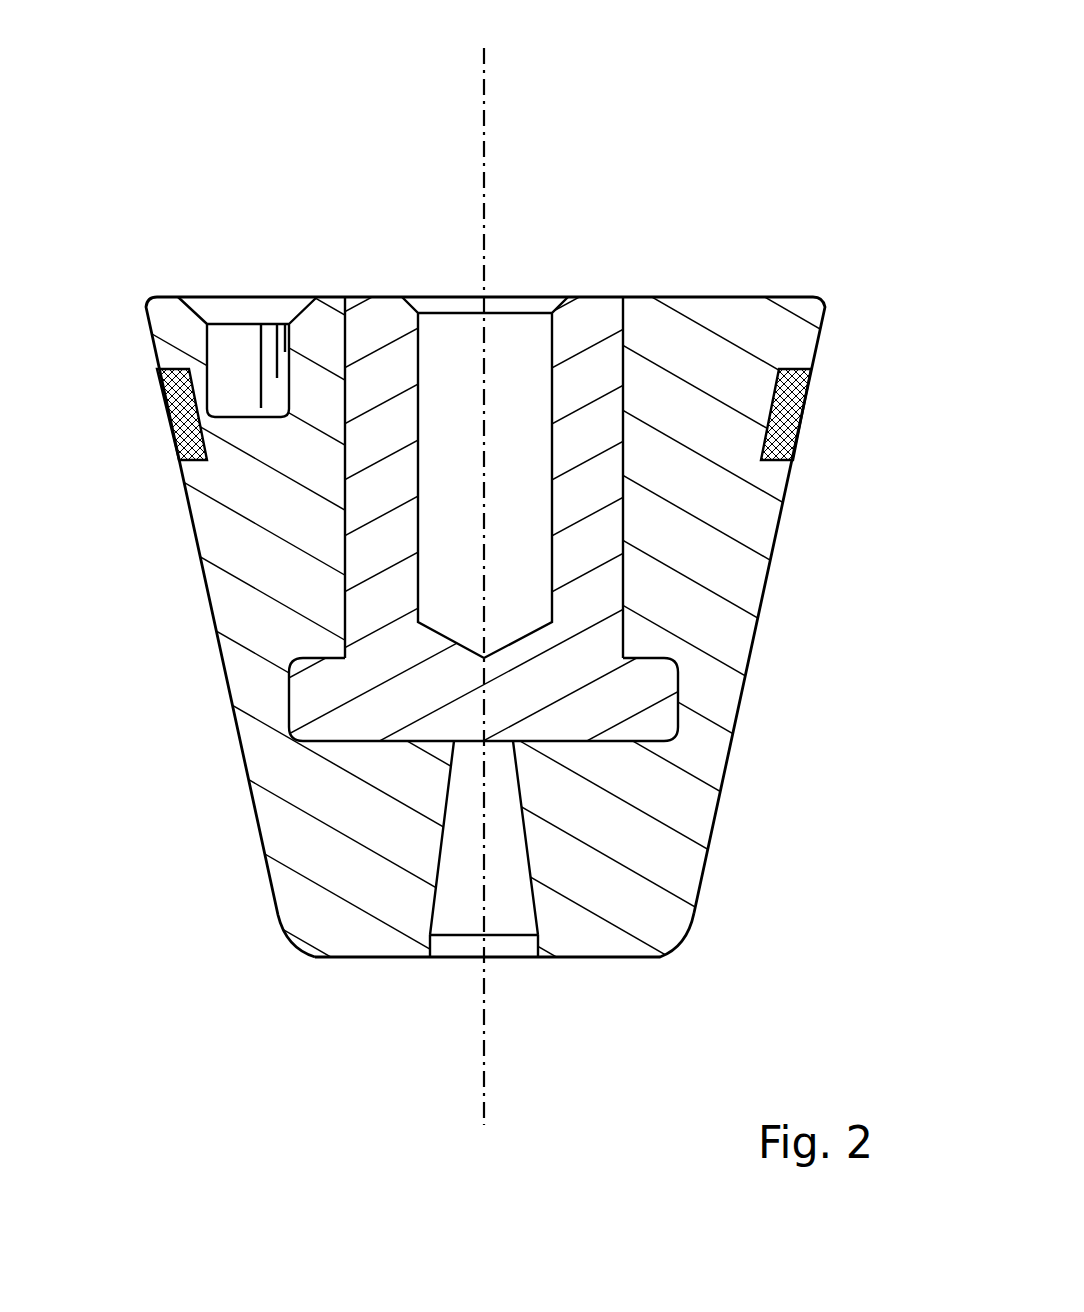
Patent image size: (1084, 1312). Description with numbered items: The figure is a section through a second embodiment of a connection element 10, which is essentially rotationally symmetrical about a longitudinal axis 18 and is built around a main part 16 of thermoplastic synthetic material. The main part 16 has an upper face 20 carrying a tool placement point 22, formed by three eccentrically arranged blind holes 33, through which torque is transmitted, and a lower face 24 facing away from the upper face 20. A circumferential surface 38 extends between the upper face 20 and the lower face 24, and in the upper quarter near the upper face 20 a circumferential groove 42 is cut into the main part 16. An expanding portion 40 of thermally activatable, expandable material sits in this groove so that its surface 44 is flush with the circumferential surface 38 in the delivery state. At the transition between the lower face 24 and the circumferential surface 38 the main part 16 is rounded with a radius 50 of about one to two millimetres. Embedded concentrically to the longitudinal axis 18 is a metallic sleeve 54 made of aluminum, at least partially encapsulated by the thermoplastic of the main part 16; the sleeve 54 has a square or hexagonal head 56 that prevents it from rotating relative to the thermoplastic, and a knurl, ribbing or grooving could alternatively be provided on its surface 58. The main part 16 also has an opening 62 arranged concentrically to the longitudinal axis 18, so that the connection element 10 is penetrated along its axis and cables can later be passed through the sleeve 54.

The connection element 10 is at (538, 529).
The main part 16 is at (735, 662).
The longitudinal axis 18 is at (484, 103).
The upper face 20 is at (738, 296).
The tool placement point 22 is at (247, 289).
The blind holes 33 is at (207, 343).
The lower face 24 is at (630, 957).
The circumferential surface 38 is at (773, 550).
The expanding portion 40 is at (790, 433).
The circumferential groove 42 is at (173, 398).
The surface of the expanding portion 44 is at (853, 397).
The radius 50 is at (295, 960).
The metallic sleeve 54 is at (603, 700).
The square or hexagonal head 56 is at (597, 757).
The surface of the sleeve 58 is at (342, 602).
The opening 62 is at (437, 907).